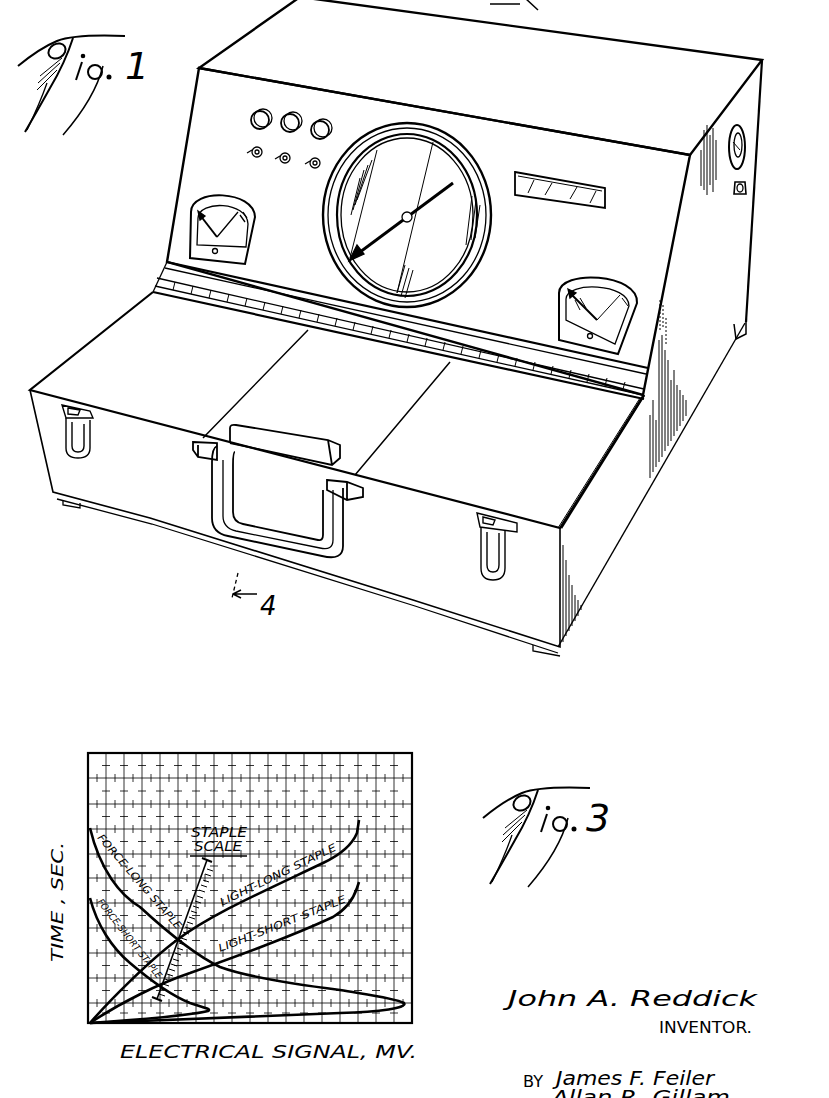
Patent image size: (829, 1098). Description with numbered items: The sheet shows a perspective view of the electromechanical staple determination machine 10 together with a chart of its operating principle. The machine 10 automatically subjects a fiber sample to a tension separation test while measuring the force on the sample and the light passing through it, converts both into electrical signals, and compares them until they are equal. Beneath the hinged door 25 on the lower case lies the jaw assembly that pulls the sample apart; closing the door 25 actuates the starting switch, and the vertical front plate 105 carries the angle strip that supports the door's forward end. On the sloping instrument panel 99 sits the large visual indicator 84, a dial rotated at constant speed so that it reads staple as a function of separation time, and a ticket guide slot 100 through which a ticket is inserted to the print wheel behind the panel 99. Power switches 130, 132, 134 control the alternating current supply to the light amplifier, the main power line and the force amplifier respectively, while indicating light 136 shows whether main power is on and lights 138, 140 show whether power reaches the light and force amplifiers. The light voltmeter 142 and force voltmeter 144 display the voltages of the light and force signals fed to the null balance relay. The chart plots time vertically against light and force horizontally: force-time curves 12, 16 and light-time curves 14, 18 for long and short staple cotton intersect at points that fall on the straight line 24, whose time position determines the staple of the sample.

In FIG. 1, the electromechanical staple determination machine 10 is at (643, 497).
In FIG. 3, the force-time curve of long staple cotton 12 is at (138, 906).
In FIG. 3, the light-time curve of long staple cotton 14 is at (358, 838).
In FIG. 3, the force-time curve of short staple cotton 16 is at (113, 952).
In FIG. 3, the light-time curve of short staple cotton 18 is at (358, 896).
In FIG. 3, the line of intersection points 24 is at (192, 886).
In FIG. 1, the hinged door 25 is at (395, 408).
In FIG. 1, the visual indicator 84 is at (455, 225).
In FIG. 1, the instrument panel 99 is at (547, 140).
In FIG. 1, the ticket guide slot 100 is at (607, 197).
In FIG. 1, the vertical front plate 105 is at (143, 497).
In FIG. 1, the power switch 130 is at (247, 153).
In FIG. 1, the power switch 132 is at (280, 160).
In FIG. 1, the power switch 134 is at (308, 170).
In FIG. 1, the indicating light 136 is at (285, 113).
In FIG. 1, the indicating light 138 is at (253, 110).
In FIG. 1, the indicating light 140 is at (317, 118).
In FIG. 1, the light voltmeter 142 is at (255, 228).
In FIG. 1, the force voltmeter 144 is at (559, 302).